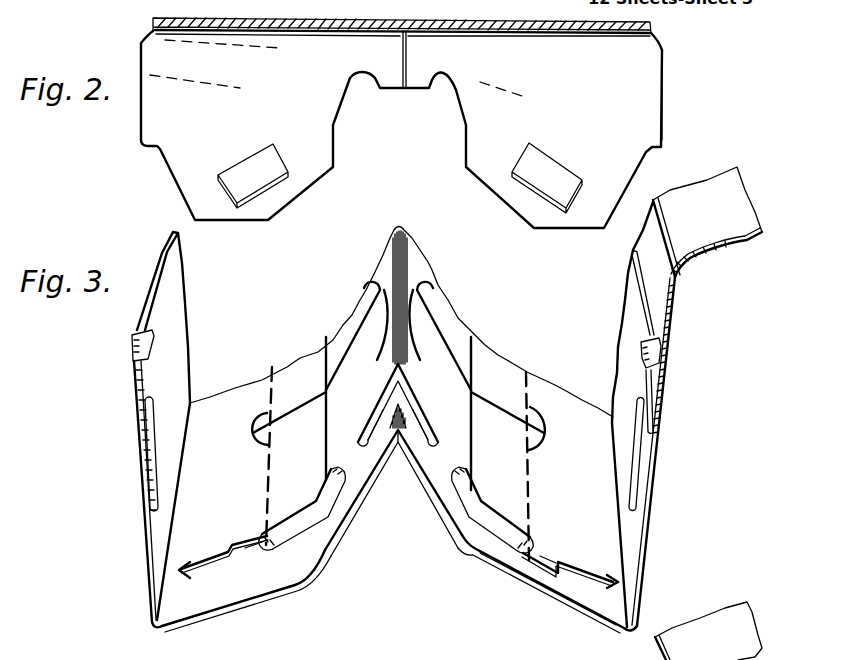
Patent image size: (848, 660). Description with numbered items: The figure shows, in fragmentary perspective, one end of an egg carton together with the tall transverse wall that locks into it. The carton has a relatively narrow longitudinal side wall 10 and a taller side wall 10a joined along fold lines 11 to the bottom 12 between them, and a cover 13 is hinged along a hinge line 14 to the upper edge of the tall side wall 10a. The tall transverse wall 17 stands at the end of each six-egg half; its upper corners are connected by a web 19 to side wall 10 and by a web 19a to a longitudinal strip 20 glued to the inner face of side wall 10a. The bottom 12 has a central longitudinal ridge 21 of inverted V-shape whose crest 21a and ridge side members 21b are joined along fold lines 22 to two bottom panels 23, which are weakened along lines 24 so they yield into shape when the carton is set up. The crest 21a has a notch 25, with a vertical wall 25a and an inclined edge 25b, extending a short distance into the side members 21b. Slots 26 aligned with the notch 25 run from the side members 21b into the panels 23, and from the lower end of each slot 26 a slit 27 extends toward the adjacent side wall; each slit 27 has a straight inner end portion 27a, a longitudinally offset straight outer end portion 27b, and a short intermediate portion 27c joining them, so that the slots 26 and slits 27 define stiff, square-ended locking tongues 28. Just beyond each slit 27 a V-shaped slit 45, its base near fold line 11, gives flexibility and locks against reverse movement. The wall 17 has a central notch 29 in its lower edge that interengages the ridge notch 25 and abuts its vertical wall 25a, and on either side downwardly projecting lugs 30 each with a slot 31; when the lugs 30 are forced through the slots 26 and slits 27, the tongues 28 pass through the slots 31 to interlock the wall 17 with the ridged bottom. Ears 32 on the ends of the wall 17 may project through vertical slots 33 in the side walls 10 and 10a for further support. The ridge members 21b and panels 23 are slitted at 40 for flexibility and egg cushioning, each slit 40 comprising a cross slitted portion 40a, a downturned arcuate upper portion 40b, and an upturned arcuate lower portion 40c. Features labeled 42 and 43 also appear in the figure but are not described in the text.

In FIG. 3, the longitudinal side wall 10 is at (147, 532).
In FIG. 3, the taller side wall 10a is at (652, 518).
In FIG. 3, the fold lines 11 is at (163, 607).
In FIG. 3, the bottom portion 12 is at (305, 572).
In FIG. 3, the cover 13 is at (745, 190).
In FIG. 3, the hinge line 14 is at (665, 230).
In FIG. 2, the tall transverse wall 17 is at (289, 90).
In FIG. 3, the web 19 is at (134, 348).
In FIG. 3, the web 19a is at (661, 354).
In FIG. 3, the longitudinal strip 20 is at (651, 390).
In FIG. 3, the central longitudinal ridge 21 is at (440, 459).
In FIG. 3, the crest 21a is at (403, 226).
In FIG. 3, the ridge side members 21b is at (430, 490).
In FIG. 3, the fold lines 22 is at (450, 535).
In FIG. 3, the longitudinal bottom panels 23 is at (242, 600).
In FIG. 3, the weakening lines 24 is at (268, 469).
In FIG. 3, the notch 25 is at (401, 388).
In FIG. 3, the vertical wall of notch 25a is at (375, 423).
In FIG. 3, the inclined edge 25b is at (421, 412).
In FIG. 3, the slots 26 is at (455, 572).
In FIG. 3, the slit 27 is at (221, 550).
In FIG. 3, the inner end portion of slit 27a is at (248, 557).
In FIG. 3, the outer end portion of slit 27b is at (207, 607).
In FIG. 3, the intermediate portion of slit 27c is at (227, 563).
In FIG. 3, the locking tongue 28 is at (245, 547).
In FIG. 2, the central notch 29 is at (443, 98).
In FIG. 2, the lugs 30 is at (472, 143).
In FIG. 2, the slot 31 is at (247, 158).
In FIG. 2, the ears 32 is at (146, 127).
In FIG. 3, the vertical slots 33 is at (150, 465).
In FIG. 3, the slits 40 is at (300, 401).
In FIG. 3, the cross slitted portion 40a is at (300, 418).
In FIG. 3, the arcuate upper portion 40b is at (377, 360).
In FIG. 3, the relief opening 40c is at (257, 433).
In FIG. 3, the curved flange 42 is at (717, 252).
In FIG. 2, the center fold line 43 is at (401, 50).
In FIG. 3, the V-shaped slit 45 is at (184, 577).